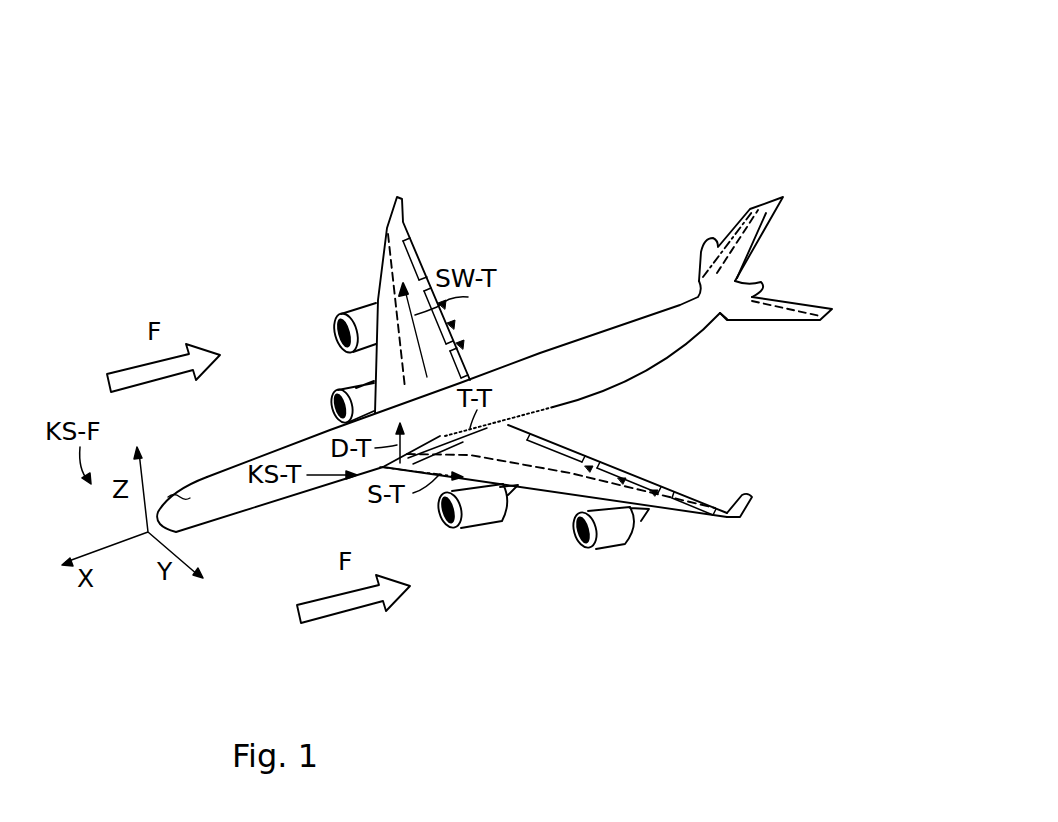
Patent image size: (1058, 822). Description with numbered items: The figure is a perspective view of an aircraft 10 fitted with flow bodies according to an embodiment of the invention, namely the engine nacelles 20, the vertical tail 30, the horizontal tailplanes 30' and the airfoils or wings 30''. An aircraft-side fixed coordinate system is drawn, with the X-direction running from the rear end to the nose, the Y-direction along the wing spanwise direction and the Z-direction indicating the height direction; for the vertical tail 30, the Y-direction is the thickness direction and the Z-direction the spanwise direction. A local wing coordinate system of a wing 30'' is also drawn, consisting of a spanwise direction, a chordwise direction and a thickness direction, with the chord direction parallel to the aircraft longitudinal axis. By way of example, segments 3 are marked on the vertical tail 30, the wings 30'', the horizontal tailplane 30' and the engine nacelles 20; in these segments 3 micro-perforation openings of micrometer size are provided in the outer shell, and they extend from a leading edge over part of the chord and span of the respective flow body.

The aircraft 10 is at (208, 470).
The engine nacelles 20 is at (575, 528).
The segments 3 is at (387, 295).
The vertical tail 30 is at (742, 149).
The horizontal tailplanes 30' is at (776, 402).
The airfoils or wings 30'' is at (421, 221).